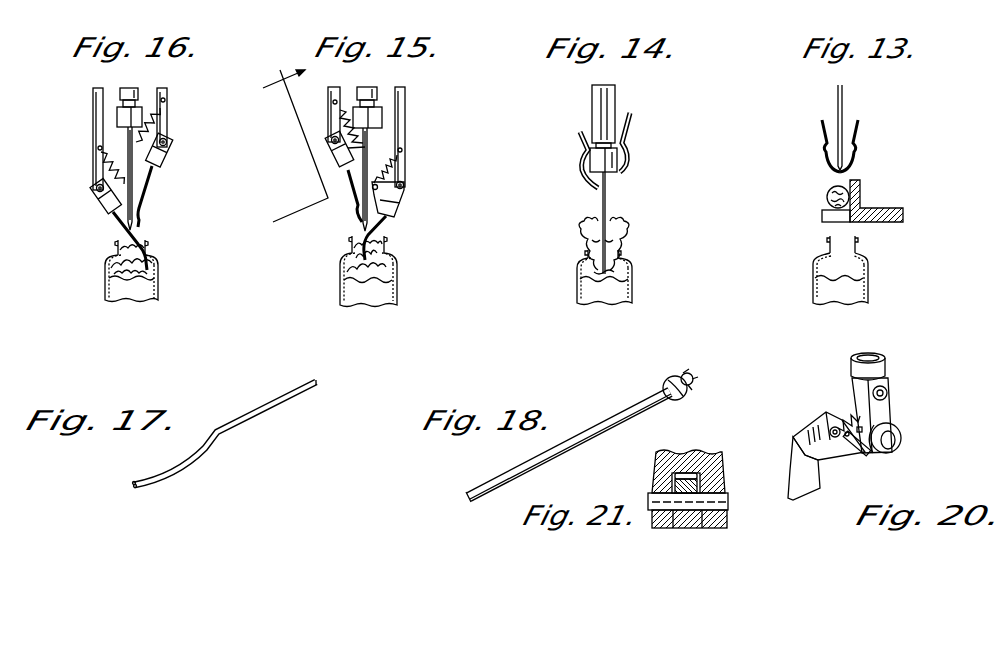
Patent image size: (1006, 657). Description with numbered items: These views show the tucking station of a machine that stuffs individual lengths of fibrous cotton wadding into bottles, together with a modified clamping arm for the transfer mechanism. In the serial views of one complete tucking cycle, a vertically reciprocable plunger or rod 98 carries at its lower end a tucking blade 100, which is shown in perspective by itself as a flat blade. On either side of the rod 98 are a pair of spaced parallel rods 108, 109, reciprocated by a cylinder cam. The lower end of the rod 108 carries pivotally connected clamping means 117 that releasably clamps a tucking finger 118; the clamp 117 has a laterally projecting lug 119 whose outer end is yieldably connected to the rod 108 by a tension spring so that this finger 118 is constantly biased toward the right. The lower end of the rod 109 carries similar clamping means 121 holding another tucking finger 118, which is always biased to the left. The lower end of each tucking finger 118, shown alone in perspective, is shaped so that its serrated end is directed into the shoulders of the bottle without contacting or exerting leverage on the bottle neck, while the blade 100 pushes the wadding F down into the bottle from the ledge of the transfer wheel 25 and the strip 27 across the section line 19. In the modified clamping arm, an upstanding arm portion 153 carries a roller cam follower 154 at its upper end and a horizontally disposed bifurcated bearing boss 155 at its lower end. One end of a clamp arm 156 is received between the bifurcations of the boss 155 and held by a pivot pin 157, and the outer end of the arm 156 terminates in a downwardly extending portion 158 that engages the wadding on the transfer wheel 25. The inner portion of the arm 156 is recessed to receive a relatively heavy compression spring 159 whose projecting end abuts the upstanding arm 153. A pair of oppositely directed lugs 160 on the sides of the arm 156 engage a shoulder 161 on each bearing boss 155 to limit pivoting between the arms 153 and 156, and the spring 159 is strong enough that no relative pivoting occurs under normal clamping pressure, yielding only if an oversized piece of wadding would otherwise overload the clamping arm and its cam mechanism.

In FIG. 15, the section line 19 is at (285, 151).
In FIG. 13, the transfer wheel 25 is at (892, 208).
In FIG. 13, the strip 27 is at (822, 216).
In FIG. 16, the plunger or rod 98 is at (136, 86).
In FIG. 15, the plunger or rod 98 is at (375, 88).
In FIG. 14, the plunger or rod 98 is at (612, 93).
In FIG. 16, the tucking blade 100 is at (136, 216).
In FIG. 15, the tucking blade 100 is at (358, 232).
In FIG. 14, the tucking blade 100 is at (607, 196).
In FIG. 13, the tucking blade 100 is at (845, 96).
In FIG. 18, the tucking blade 100 is at (608, 417).
In FIG. 16, the rod 108 is at (93, 100).
In FIG. 15, the rod 108 is at (328, 97).
In FIG. 16, the rod 109 is at (168, 94).
In FIG. 15, the rod 109 is at (406, 101).
In FIG. 16, the clamping means 117 is at (95, 186).
In FIG. 15, the clamping means 117 is at (348, 148).
In FIG. 16, the tucking finger 118 is at (122, 226).
In FIG. 15, the tucking finger 118 is at (350, 200).
In FIG. 14, the tucking finger 118 is at (577, 134).
In FIG. 13, the tucking finger 118 is at (822, 128).
In FIG. 17, the tucking finger 118 is at (263, 406).
In FIG. 16, the laterally projecting lug 119 is at (103, 200).
In FIG. 15, the laterally projecting lug 119 is at (340, 172).
In FIG. 16, the clamping means 121 is at (172, 150).
In FIG. 15, the clamping means 121 is at (405, 200).
In FIG. 21, the upstanding arm portion 153 is at (712, 454).
In FIG. 20, the upstanding arm portion 153 is at (887, 405).
In FIG. 20, the roller cam follower 154 is at (885, 364).
In FIG. 21, the bifurcated bearing boss 155 is at (653, 484).
In FIG. 20, the bifurcated bearing boss 155 is at (901, 440).
In FIG. 21, the clamp arm 156 is at (688, 527).
In FIG. 20, the clamp arm 156 is at (797, 437).
In FIG. 21, the pivot pin 157 is at (741, 507).
In FIG. 20, the downwardly extending portion 158 is at (806, 490).
In FIG. 20, the compression spring 159 is at (832, 413).
In FIG. 20, the lugs 160 is at (855, 455).
In FIG. 20, the shoulder 161 is at (875, 452).
In FIG. 13, the fluff F is at (825, 192).